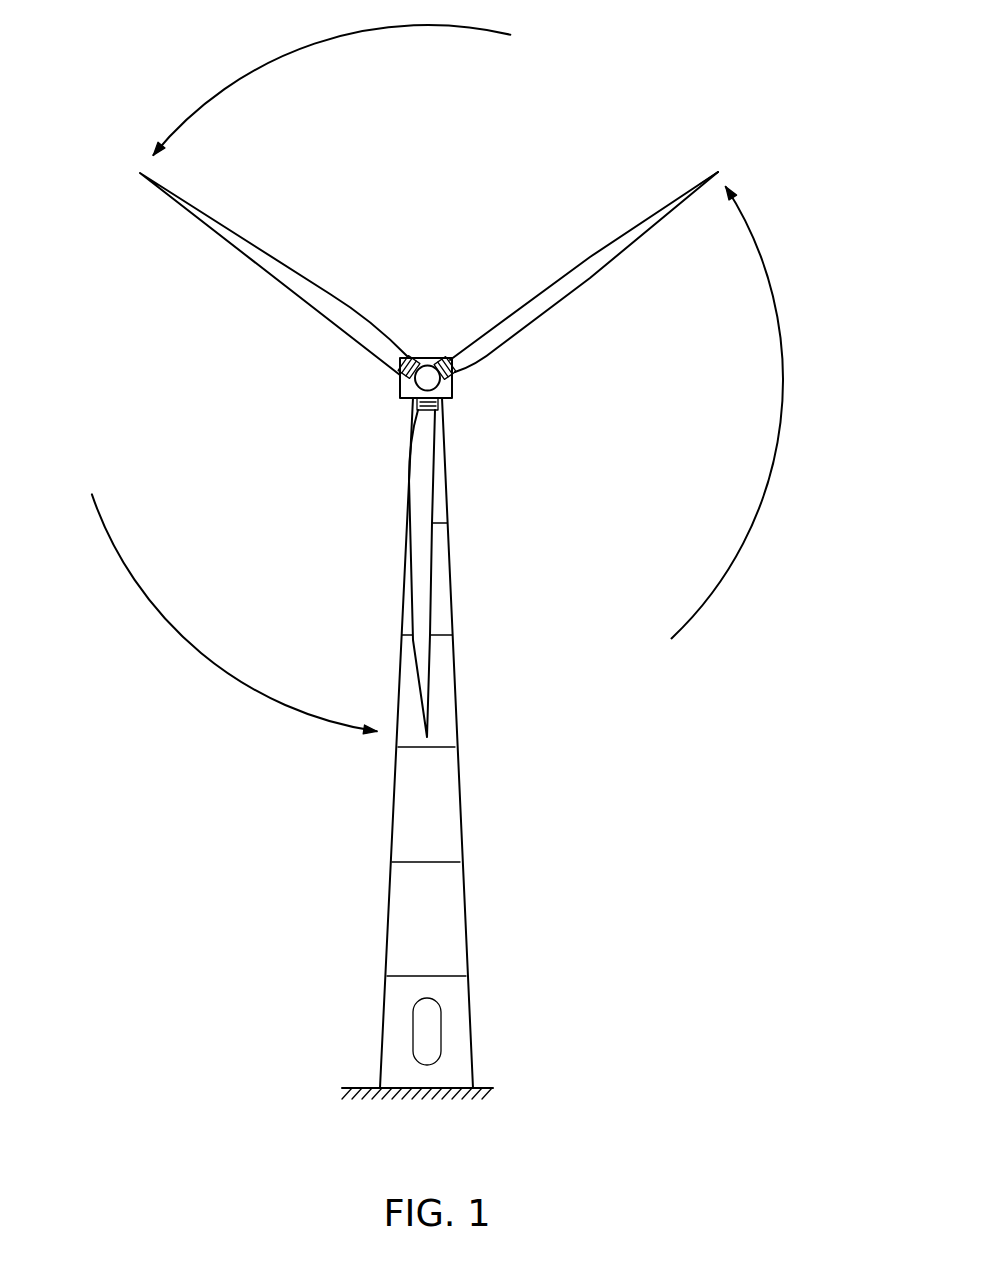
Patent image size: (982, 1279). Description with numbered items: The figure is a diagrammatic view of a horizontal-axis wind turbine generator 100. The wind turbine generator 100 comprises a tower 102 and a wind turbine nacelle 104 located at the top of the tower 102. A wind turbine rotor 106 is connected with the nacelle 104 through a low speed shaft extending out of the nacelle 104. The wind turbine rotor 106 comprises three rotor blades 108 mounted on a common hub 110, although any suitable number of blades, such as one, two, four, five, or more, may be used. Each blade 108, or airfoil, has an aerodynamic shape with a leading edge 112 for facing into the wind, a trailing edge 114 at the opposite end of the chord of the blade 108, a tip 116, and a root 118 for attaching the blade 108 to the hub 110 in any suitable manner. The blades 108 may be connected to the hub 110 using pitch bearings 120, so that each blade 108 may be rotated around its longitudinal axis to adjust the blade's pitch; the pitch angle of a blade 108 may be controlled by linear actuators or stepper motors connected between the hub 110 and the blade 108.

The wind turbine generator 100 is at (376, 927).
The tower 102 is at (452, 817).
The wind turbine nacelle 104 is at (455, 400).
The wind turbine rotor 106 is at (488, 423).
The rotor blade 108 is at (268, 262).
The hub 110 is at (426, 377).
The leading edge 112 is at (607, 248).
The trailing edge 114 is at (597, 270).
The tip 116 is at (728, 156).
The root 118 is at (478, 379).
The pitch bearing 120 is at (446, 362).